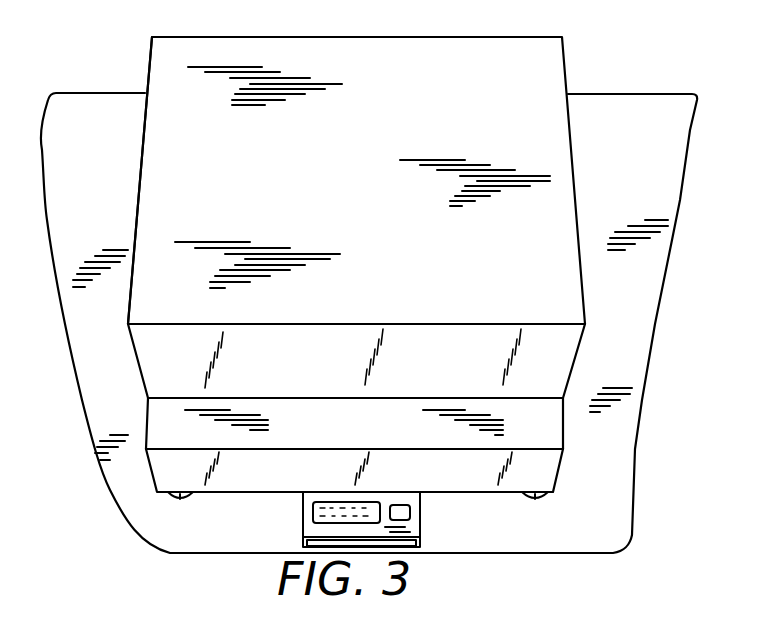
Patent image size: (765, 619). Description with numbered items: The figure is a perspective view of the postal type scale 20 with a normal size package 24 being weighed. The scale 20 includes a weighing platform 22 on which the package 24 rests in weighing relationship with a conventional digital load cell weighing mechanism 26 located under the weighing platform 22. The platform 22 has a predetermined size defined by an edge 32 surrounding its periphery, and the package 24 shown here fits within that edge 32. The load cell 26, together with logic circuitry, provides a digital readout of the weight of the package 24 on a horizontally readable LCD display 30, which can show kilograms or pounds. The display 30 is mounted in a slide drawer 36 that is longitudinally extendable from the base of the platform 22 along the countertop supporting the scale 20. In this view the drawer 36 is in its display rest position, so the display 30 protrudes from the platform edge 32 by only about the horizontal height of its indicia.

The postal type scale 20 is at (630, 175).
The weighing platform 22 is at (163, 423).
The package 24 is at (163, 161).
The load cell weighing mechanism 26 is at (167, 215).
The LCD display 30 is at (298, 518).
The edge 32 is at (552, 468).
The slide drawer 36 is at (420, 530).